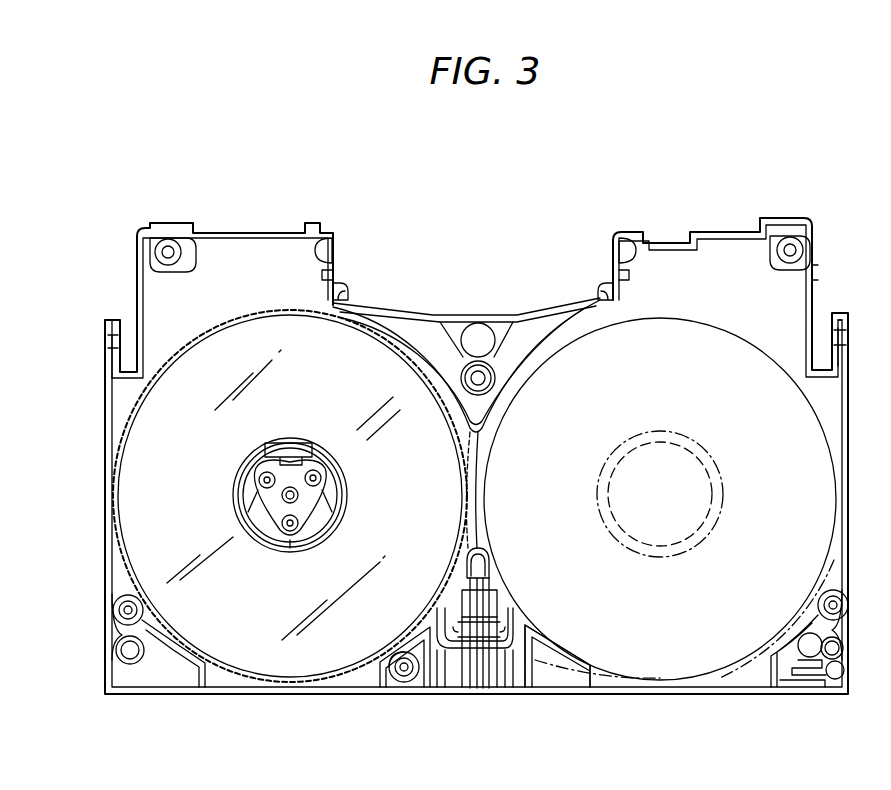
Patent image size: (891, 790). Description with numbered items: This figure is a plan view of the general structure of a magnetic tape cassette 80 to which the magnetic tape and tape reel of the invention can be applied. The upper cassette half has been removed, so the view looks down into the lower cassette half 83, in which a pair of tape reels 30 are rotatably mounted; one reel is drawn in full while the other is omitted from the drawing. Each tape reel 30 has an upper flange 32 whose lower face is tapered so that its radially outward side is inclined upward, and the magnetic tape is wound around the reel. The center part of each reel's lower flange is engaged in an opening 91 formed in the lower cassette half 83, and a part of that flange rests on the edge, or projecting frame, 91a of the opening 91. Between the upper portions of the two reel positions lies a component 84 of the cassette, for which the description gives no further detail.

The magnetic tape cassette 80 is at (495, 213).
The reel arm 84 is at (548, 265).
The upper flange 32 is at (222, 372).
The tape reel 30 is at (272, 306).
The opening 91 is at (662, 515).
The edge (projecting frame) of the opening 91a is at (722, 484).
The lower cassette half 83 is at (542, 680).